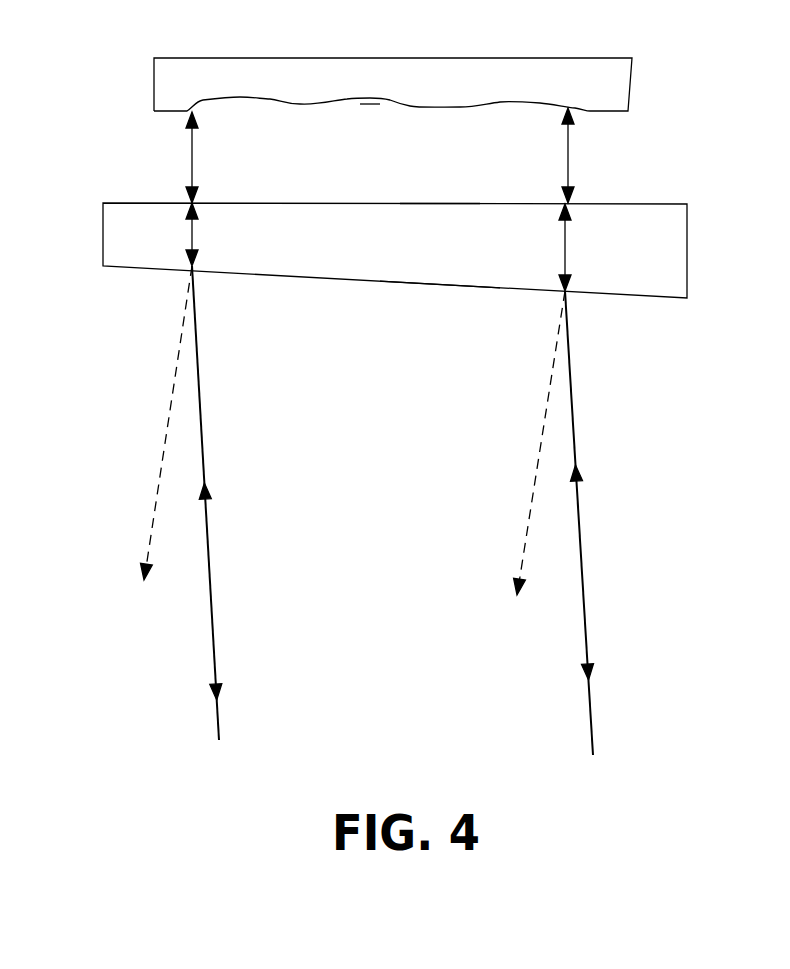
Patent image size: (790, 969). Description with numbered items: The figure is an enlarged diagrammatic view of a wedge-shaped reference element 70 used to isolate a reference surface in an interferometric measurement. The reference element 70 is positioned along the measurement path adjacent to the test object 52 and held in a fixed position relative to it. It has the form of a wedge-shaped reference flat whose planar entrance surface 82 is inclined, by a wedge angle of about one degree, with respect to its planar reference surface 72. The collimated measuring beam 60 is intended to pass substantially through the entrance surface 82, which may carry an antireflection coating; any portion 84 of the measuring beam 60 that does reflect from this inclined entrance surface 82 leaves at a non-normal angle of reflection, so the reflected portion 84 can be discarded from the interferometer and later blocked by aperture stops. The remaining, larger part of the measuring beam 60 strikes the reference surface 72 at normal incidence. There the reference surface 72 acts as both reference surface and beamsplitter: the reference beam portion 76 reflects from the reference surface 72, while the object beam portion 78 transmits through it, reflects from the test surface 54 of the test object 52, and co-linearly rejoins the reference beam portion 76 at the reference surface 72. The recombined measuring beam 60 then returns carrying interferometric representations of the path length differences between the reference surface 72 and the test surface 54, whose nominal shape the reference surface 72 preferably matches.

The test object 52 is at (260, 76).
The test surface 54 is at (390, 104).
The object beam portion 78 is at (198, 151).
The reference surface 72 is at (440, 203).
The reference element 70 is at (125, 233).
The reference beam portion 76 is at (195, 239).
The entrance surface 82 is at (437, 287).
The measuring beam 60 is at (212, 617).
The reflected portion of the measuring beam 84 is at (155, 520).